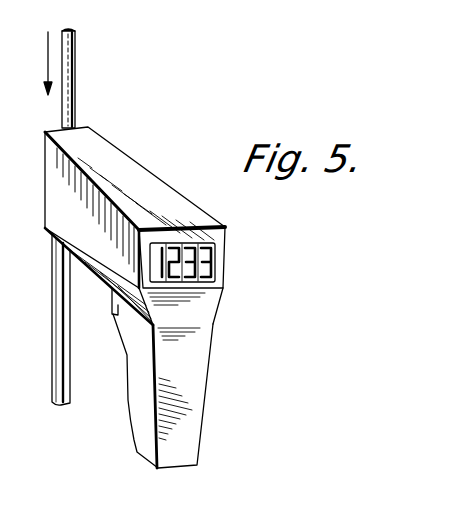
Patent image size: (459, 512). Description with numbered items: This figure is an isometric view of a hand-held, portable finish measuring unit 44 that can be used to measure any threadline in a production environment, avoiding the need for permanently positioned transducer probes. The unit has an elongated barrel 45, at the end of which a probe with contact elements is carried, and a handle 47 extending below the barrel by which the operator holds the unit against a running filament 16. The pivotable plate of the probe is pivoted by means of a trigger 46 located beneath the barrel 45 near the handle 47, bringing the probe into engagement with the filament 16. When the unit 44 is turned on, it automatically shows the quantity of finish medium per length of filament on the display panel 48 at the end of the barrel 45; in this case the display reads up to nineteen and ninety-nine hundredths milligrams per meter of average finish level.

The filament 16 is at (76, 55).
The hand-held portable unit 44 is at (192, 294).
The barrel 45 is at (97, 150).
The trigger 46 is at (112, 313).
The handle 47 is at (188, 422).
The display panel 48 is at (215, 263).